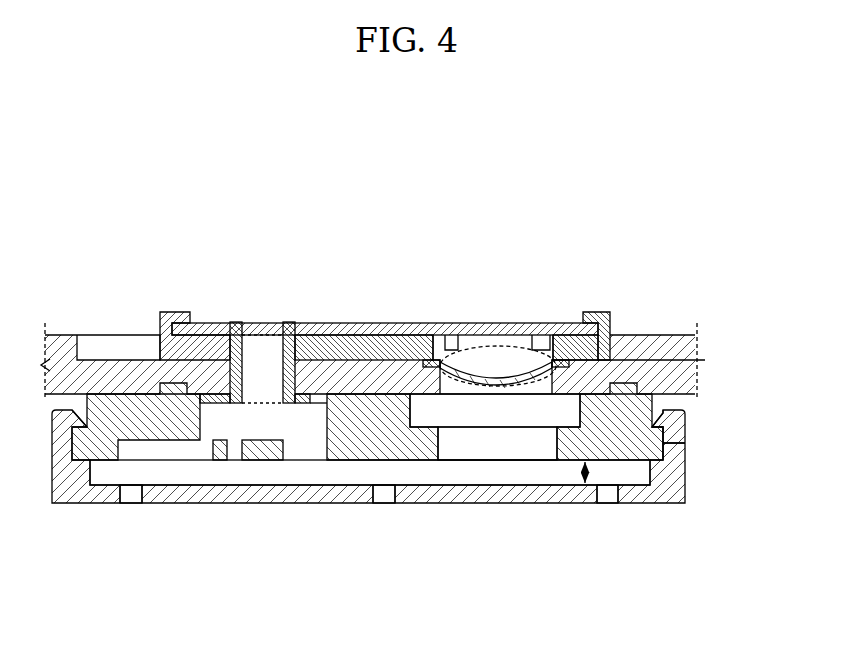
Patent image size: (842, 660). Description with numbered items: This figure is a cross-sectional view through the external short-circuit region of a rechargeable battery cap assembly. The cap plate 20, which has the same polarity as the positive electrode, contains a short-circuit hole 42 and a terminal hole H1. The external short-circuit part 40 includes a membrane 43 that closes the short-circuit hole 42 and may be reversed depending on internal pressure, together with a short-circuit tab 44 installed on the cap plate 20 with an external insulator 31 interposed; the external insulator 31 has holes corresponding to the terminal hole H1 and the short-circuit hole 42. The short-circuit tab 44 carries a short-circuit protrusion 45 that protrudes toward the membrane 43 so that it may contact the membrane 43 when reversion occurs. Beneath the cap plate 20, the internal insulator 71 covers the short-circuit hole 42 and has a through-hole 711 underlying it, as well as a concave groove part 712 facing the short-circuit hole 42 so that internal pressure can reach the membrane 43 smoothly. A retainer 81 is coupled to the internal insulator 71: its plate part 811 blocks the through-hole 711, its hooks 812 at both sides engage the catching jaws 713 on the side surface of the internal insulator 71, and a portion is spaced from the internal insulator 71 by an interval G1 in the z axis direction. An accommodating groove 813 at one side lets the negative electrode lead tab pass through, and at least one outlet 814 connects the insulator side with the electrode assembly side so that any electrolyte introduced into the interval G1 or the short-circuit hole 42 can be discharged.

The cap plate 20 is at (661, 377).
The external insulator 31 is at (176, 313).
The external short-circuit part 40 is at (414, 290).
The short-circuit hole 42 is at (521, 380).
The membrane 43 is at (487, 378).
The short-circuit tab 44 is at (342, 328).
The short-circuit protrusion 45 is at (536, 349).
The internal insulator 71 is at (351, 460).
The through-hole 711 is at (492, 443).
The concave groove part 712 is at (428, 411).
The catching jaws 713 is at (686, 444).
The retainer 81 is at (232, 506).
The plate part 811 is at (289, 492).
The hooks 812 is at (686, 418).
The accommodating groove 813 is at (132, 492).
The outlet 814 is at (383, 495).
The interval G1 is at (581, 472).
The terminal hole H1 is at (248, 377).